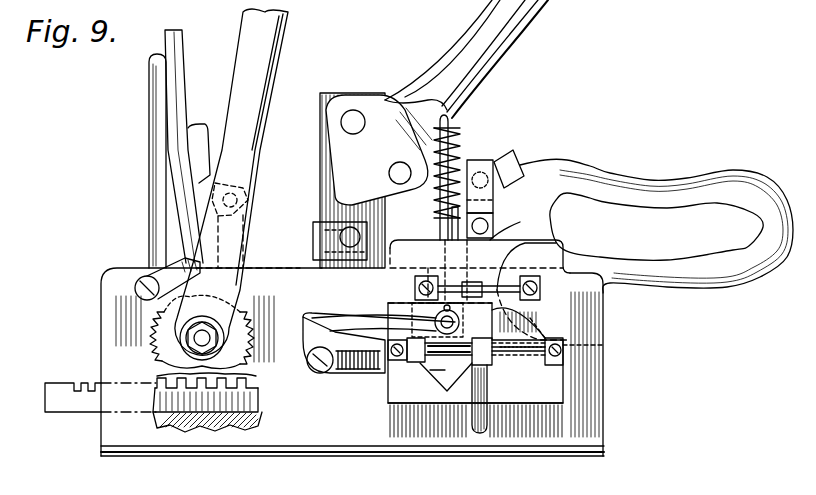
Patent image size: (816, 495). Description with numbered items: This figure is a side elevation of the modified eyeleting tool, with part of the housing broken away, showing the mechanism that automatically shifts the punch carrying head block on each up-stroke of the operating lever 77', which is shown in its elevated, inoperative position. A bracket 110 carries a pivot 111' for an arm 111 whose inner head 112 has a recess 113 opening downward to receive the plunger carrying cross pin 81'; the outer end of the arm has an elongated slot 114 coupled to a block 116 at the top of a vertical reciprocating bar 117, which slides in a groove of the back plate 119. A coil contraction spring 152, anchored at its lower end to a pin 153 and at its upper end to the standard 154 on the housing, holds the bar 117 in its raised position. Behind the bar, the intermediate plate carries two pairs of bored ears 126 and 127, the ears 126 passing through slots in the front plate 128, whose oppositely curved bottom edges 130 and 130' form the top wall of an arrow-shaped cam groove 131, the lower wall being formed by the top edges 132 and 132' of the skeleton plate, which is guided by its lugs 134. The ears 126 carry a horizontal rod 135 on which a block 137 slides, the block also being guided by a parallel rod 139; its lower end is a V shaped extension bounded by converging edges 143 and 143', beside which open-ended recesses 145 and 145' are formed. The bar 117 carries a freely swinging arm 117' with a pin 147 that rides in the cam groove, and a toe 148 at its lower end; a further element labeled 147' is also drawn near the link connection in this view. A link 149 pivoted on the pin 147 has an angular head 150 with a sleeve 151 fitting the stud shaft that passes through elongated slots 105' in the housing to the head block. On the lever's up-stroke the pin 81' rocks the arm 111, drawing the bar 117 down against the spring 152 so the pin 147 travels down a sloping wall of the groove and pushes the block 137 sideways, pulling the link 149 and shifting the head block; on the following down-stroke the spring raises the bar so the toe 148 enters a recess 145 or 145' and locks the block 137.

The operating lever 77' is at (480, 59).
The standard 154 is at (462, 118).
The coil contraction spring 152 is at (462, 130).
The block 116 is at (478, 160).
The arm 111 is at (449, 150).
The elongated slot 114 is at (520, 165).
The head 112 is at (345, 200).
The recess 113 is at (330, 228).
The bracket 110 is at (335, 262).
The pivot 111' is at (374, 241).
The pin 153 is at (462, 223).
The front plate 128 is at (480, 270).
The vertical reciprocating bar 117 is at (504, 217).
The arm 117' is at (518, 228).
The pin 147 is at (646, 226).
The laterally projecting bored ears 126 is at (540, 278).
The horizontal rod 135 is at (504, 290).
The plunger carrying cross pin 81' is at (256, 324).
The link 149 is at (374, 307).
The curved edge portion 130 is at (383, 313).
The cam 147' is at (415, 319).
The angular head 150 is at (305, 322).
The curved edge portion 130' is at (552, 314).
The arrow-shaped cam groove 131 is at (520, 338).
The top edge of skeleton plate 132' is at (546, 332).
The laterally projecting bored ears 127 is at (565, 352).
The lugs 134 is at (572, 355).
The toe 148 is at (488, 368).
The open-ended recess 145 is at (533, 369).
The horizontal rod 139 is at (352, 362).
The back plate 119 is at (600, 398).
The block 137 is at (475, 353).
The open-ended recess 145' is at (358, 372).
The sleeve 151 is at (306, 352).
The elongated slots 105' is at (184, 402).
The top edge of skeleton plate 132 is at (373, 382).
The converging side edge 143' is at (403, 430).
The converging side edge 143 is at (451, 427).